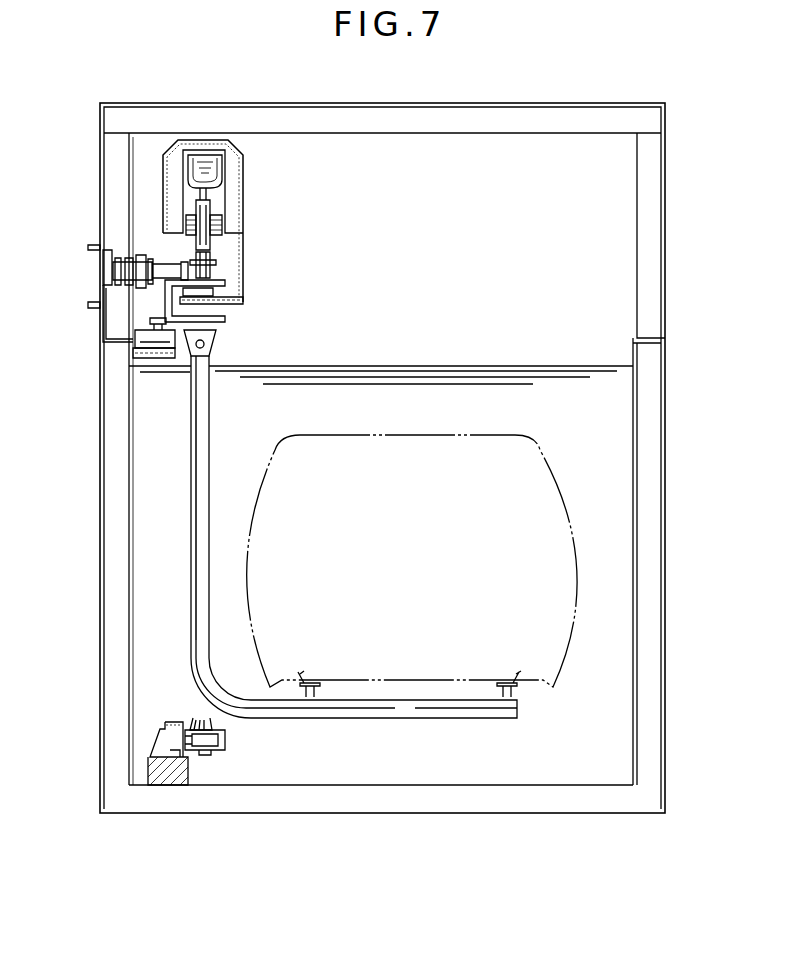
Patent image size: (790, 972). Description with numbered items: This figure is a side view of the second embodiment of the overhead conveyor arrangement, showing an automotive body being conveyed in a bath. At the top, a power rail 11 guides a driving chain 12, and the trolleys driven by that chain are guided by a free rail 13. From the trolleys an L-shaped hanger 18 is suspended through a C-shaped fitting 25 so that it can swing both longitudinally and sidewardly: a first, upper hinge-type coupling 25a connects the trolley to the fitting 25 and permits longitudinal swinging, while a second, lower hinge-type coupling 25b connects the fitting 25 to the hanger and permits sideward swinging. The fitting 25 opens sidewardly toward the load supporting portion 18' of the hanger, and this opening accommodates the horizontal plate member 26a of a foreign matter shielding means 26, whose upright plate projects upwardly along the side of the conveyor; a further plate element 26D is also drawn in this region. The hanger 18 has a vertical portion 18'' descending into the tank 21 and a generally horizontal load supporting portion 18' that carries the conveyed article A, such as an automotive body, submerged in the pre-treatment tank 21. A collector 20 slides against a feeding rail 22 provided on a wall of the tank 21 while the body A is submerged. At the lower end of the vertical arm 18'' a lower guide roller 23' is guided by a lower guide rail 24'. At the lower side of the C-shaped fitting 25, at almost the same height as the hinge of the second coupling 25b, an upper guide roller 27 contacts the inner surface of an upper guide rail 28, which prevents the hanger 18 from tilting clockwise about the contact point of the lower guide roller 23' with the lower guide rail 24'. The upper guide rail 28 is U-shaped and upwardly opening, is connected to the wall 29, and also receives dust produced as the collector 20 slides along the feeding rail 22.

The power rail 11 is at (208, 150).
The driving chain 12 is at (213, 200).
The free rail 13 is at (221, 224).
The L-shaped hanger 18 is at (157, 537).
The load supporting portion 18' is at (381, 741).
The vertical portion 18'' is at (175, 520).
The collector 20 is at (171, 263).
The tank 21 is at (652, 257).
The feeding rail 22 is at (100, 292).
The lower guide roller 23' is at (231, 750).
The lower guide rail 24' is at (119, 752).
The C-shaped fitting 25 is at (160, 310).
The first hinge-type coupling 25a is at (217, 262).
The second hinge-type coupling 25b is at (217, 342).
The foreign matter shielding means 26 is at (252, 205).
The horizontal plate member 26a is at (220, 308).
The housing plate 26D is at (243, 290).
The upper guide roller 27 is at (150, 333).
The upper guide rail 28 is at (148, 357).
The wall 29 is at (128, 581).
The conveyed article A is at (548, 497).